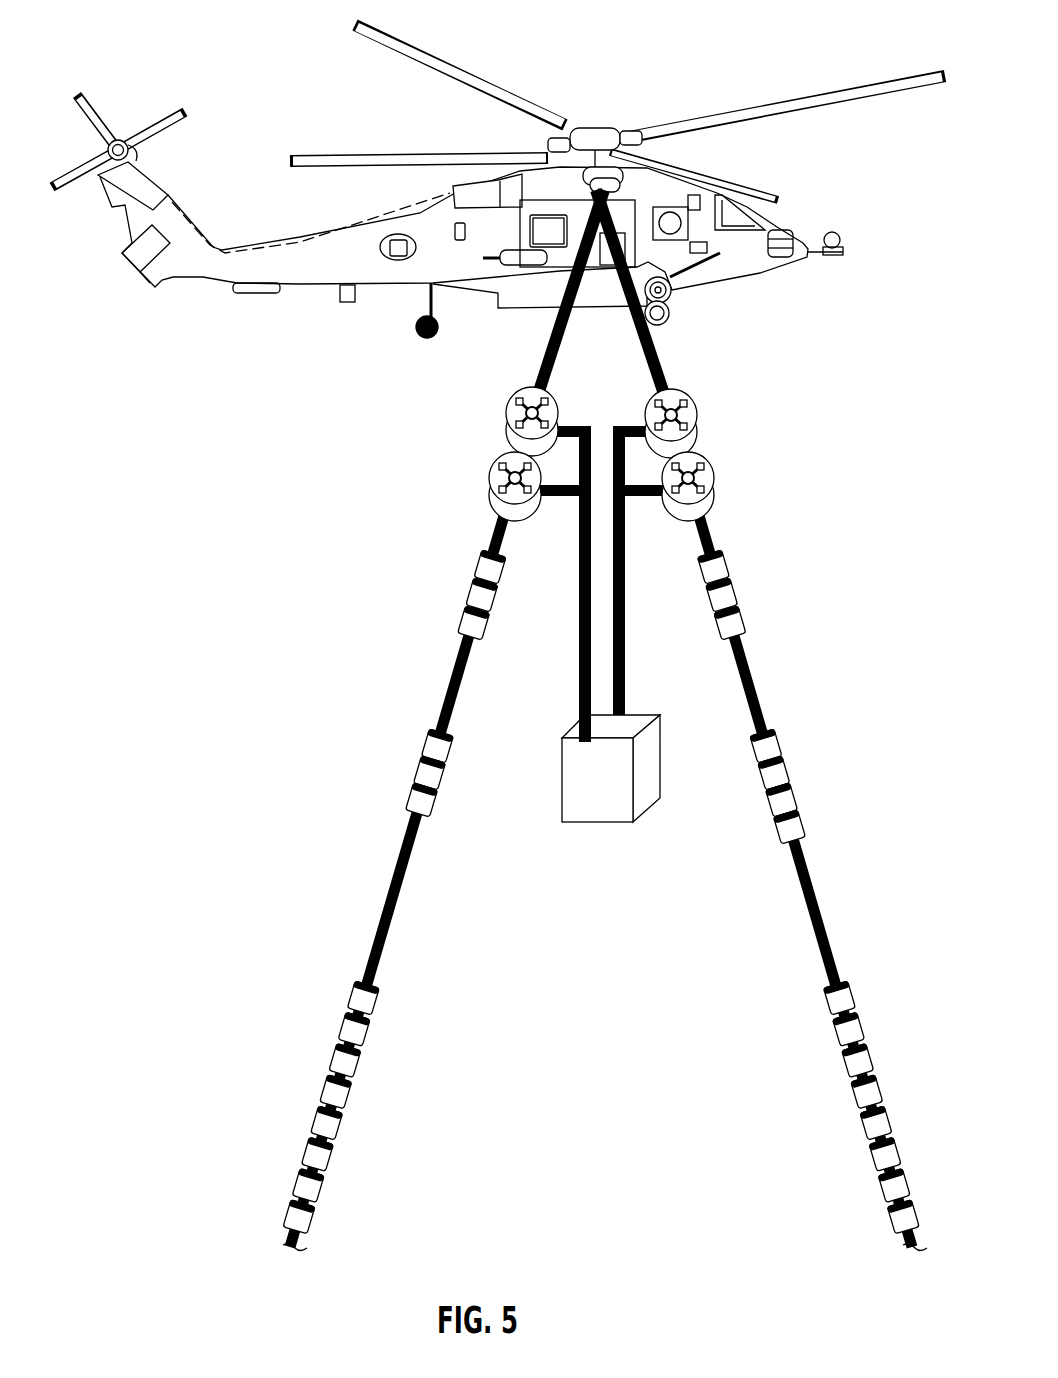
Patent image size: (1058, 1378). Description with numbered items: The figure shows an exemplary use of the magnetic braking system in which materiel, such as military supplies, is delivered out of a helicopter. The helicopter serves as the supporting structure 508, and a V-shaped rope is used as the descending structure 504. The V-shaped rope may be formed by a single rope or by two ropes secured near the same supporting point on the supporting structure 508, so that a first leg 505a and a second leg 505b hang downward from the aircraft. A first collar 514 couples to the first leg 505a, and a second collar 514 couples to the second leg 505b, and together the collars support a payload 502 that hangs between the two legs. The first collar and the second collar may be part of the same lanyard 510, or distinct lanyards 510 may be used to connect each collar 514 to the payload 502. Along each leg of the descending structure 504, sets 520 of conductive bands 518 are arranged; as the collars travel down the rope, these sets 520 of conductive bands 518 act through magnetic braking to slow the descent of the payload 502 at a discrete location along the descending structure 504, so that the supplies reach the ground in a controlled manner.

The payload 502 is at (590, 812).
The descending structure 504 is at (343, 899).
The first leg 505a is at (553, 330).
The second leg 505b is at (660, 363).
The supporting structure 508 is at (393, 233).
The lanyard 510 is at (580, 673).
The collar 514 is at (487, 483).
The conductive bands 518 is at (468, 593).
The sets of conductive bands 520 is at (422, 733).